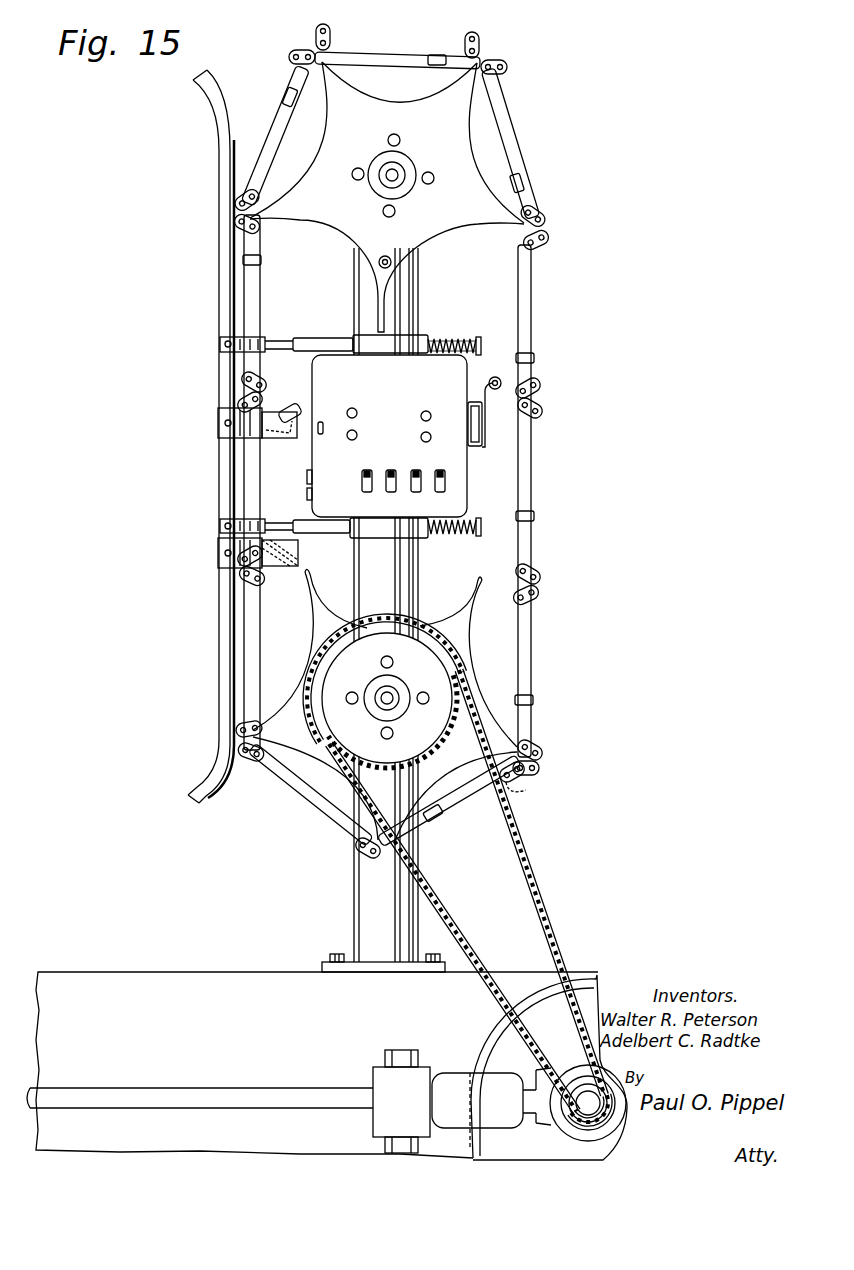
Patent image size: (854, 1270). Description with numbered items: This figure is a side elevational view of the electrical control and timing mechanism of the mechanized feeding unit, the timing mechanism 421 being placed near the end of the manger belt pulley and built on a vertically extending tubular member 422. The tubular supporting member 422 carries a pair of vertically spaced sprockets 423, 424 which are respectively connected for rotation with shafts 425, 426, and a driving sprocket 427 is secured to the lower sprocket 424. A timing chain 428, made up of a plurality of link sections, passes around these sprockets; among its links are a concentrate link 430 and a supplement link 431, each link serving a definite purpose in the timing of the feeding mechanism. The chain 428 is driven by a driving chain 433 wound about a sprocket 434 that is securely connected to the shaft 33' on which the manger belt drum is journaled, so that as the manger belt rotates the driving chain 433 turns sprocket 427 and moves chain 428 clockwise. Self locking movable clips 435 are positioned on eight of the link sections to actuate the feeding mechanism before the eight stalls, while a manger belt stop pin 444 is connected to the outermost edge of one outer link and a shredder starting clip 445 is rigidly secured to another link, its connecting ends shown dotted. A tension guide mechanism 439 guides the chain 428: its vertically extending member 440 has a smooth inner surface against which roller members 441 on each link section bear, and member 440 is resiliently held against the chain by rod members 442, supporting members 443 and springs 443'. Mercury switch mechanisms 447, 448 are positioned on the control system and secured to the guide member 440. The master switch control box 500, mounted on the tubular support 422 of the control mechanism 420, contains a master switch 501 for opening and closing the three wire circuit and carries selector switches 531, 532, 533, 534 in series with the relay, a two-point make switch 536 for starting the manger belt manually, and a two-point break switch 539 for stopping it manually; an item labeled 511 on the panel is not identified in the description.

The control mechanism 420 is at (540, 558).
The timing mechanism 421 is at (535, 300).
The tubular supporting member 422 is at (366, 290).
The sprocket 423 is at (455, 138).
The sprocket 424 is at (482, 604).
The shaft 425 is at (392, 172).
The shaft 426 is at (392, 696).
The driving sprocket 427 is at (455, 690).
The timing chain 428 is at (532, 466).
The concentrate link 430 is at (538, 410).
The supplement link 431 is at (540, 752).
The driving chain 433 is at (532, 845).
The sprocket 434 is at (583, 1090).
The self locking movable clip 435 is at (248, 260).
The tension guide mechanism 439 is at (220, 305).
The vertically extending member 440 is at (220, 607).
The roller members 441 is at (540, 240).
The rod members 442 is at (312, 345).
The supporting members 443 is at (412, 435).
The springs 443' is at (466, 435).
The manger belt stop pin 444 is at (258, 727).
The shredder starting clip 445 is at (514, 778).
The mercury switch mechanism 447 is at (218, 420).
The mercury switch mechanism 448 is at (218, 551).
The master switch control box 500 is at (465, 368).
The master switch 501 is at (498, 388).
The elevator switches 511 is at (447, 428).
The selector switch 531 is at (362, 475).
The selector switch 532 is at (388, 468).
The selector switch 533 is at (418, 489).
The selector switch 534 is at (446, 481).
The two-point make switch 536 is at (365, 406).
The two-point break switch 539 is at (358, 428).
The shaft 33' is at (494, 1110).